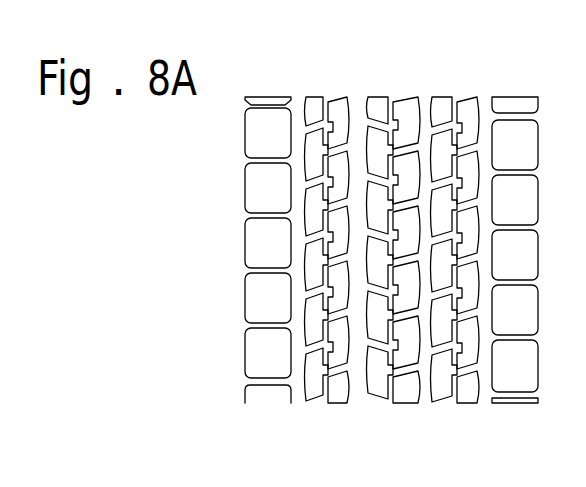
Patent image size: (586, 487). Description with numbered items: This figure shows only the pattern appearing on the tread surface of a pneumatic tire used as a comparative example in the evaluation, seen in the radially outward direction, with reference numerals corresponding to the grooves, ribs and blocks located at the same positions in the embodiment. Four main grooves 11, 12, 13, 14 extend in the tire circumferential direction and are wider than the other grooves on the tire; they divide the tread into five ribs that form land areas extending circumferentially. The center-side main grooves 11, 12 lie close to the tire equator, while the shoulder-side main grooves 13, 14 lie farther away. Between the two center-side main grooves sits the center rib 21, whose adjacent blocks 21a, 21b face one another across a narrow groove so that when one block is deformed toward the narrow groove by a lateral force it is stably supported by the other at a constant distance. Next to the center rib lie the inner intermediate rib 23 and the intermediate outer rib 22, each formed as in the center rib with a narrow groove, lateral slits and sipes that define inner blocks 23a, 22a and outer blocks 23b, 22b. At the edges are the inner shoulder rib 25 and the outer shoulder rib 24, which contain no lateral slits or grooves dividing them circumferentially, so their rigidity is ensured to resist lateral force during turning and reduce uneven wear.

The main groove 11 is at (422, 395).
The main groove 12 is at (360, 397).
The main groove 13 is at (483, 398).
The main groove 14 is at (300, 393).
The center rib 21 is at (392, 247).
The block 21a is at (405, 125).
The block 21b is at (382, 130).
The intermediate outer rib 22 is at (475, 248).
The inner block 22a is at (468, 102).
The outer block 22b is at (443, 147).
The inner intermediate rib 23 is at (309, 244).
The inner block 23a is at (342, 112).
The outer block 23b is at (316, 144).
The outer shoulder rib 24 is at (517, 403).
The inner shoulder rib 25 is at (267, 398).